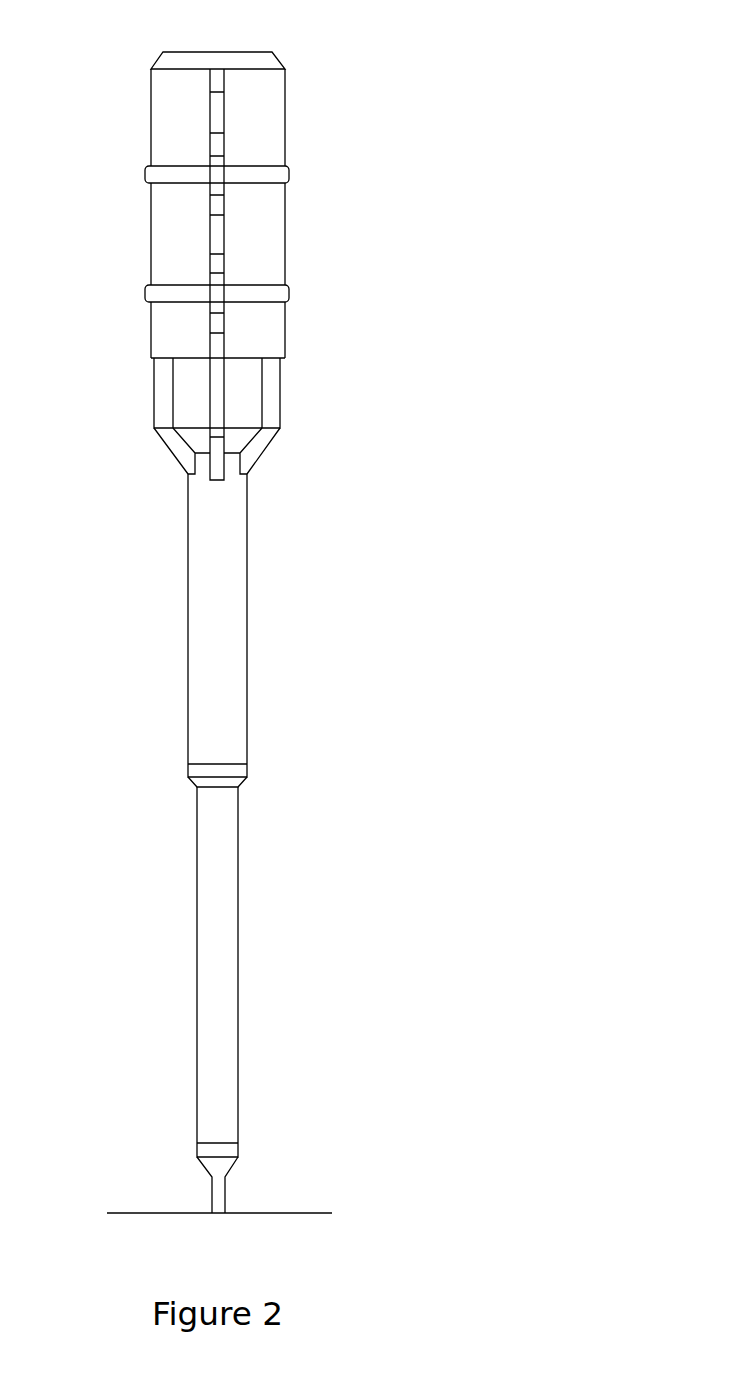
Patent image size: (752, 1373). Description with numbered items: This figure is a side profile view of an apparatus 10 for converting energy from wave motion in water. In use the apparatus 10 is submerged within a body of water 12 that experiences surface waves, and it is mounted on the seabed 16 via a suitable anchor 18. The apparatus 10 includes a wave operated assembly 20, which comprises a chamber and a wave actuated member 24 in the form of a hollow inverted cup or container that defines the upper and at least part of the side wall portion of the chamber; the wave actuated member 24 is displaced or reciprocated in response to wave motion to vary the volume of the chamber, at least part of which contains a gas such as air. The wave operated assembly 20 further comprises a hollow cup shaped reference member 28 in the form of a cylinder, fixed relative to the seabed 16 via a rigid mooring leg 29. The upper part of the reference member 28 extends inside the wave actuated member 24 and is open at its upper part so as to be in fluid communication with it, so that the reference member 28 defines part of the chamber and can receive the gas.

The apparatus 10 is at (317, 32).
The body of water 12 is at (413, 255).
The seabed 16 is at (285, 1215).
The anchor 18 is at (217, 1215).
The wave operated assembly 20 is at (256, 132).
The wave actuated member 24 is at (150, 143).
The reference member 28 is at (242, 395).
The rigid mooring leg 29 is at (225, 622).